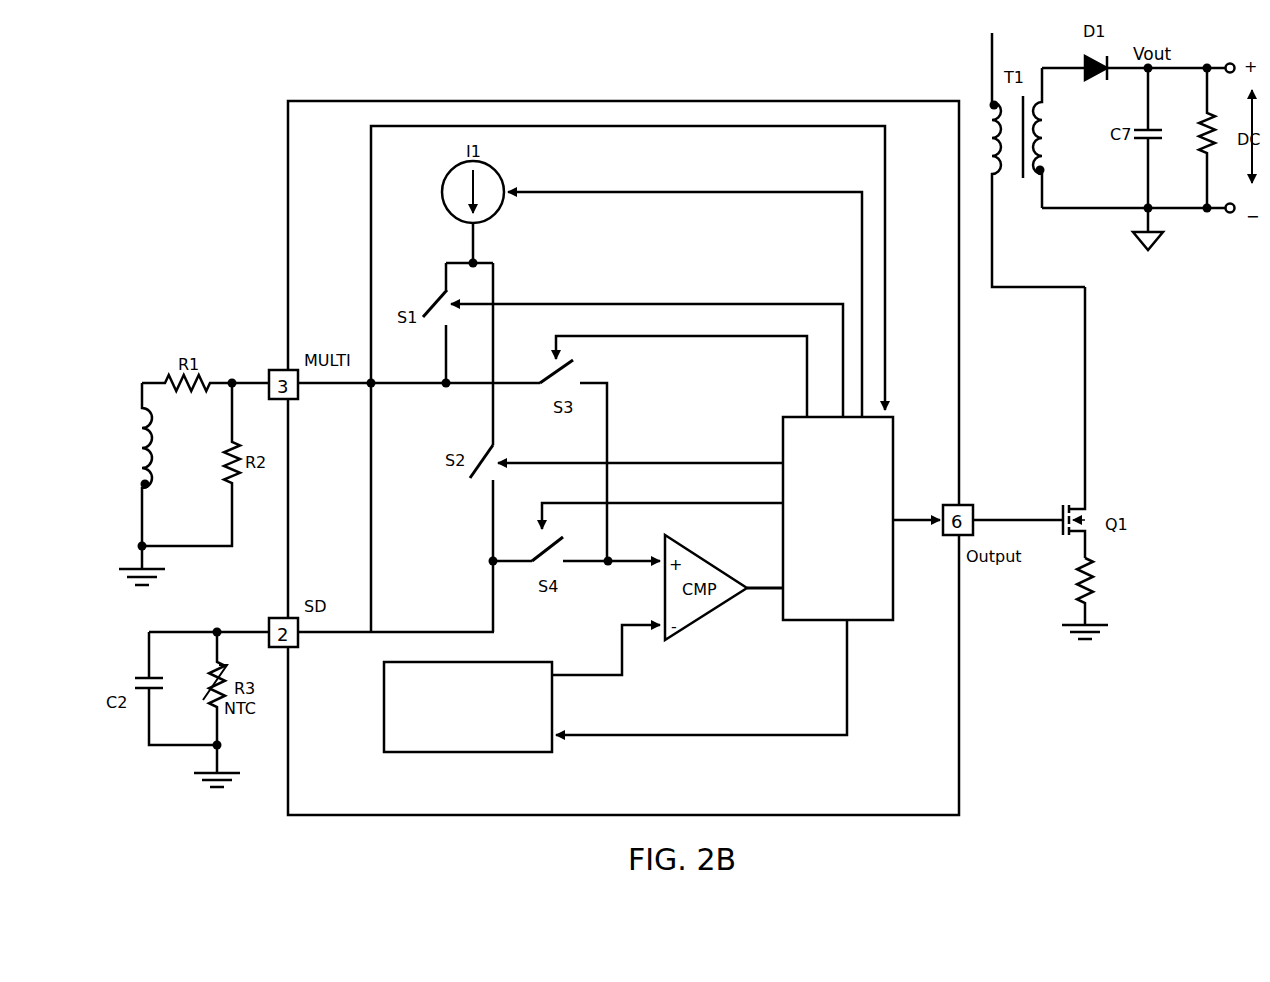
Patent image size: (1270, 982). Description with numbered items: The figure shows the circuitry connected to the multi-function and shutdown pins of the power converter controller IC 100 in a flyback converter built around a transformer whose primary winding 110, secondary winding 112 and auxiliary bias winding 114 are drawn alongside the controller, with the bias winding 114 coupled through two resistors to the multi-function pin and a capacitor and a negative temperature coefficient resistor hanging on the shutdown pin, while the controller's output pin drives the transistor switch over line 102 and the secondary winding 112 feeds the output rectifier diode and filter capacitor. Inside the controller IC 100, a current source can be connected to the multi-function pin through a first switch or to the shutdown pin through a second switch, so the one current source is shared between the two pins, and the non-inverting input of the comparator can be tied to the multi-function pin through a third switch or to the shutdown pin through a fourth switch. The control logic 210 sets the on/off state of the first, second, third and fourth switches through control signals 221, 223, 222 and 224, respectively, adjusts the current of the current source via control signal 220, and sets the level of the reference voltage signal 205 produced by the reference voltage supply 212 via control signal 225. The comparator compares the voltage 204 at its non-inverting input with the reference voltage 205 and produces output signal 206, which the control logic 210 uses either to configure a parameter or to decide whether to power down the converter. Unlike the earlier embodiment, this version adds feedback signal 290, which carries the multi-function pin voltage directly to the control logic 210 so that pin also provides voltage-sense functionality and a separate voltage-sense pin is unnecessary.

The power converter controller IC 100 is at (320, 101).
The output signal line to power switch 102 is at (1032, 520).
The primary winding 110 is at (983, 104).
The secondary winding 112 is at (1052, 146).
The auxiliary bias winding 114 is at (112, 464).
The voltage at non-inverting input 204 is at (655, 561).
The reference voltage signal 205 is at (622, 671).
The comparator output signal 206 is at (757, 590).
The control logic 210 is at (838, 518).
The reference voltage supply 212 is at (468, 707).
The control signal 220 is at (760, 192).
The control signal 221 is at (768, 304).
The control signal 222 is at (772, 336).
The control signal 223 is at (763, 463).
The control signal 224 is at (765, 503).
The control signal 225 is at (800, 735).
The feedback signal 290 is at (371, 189).